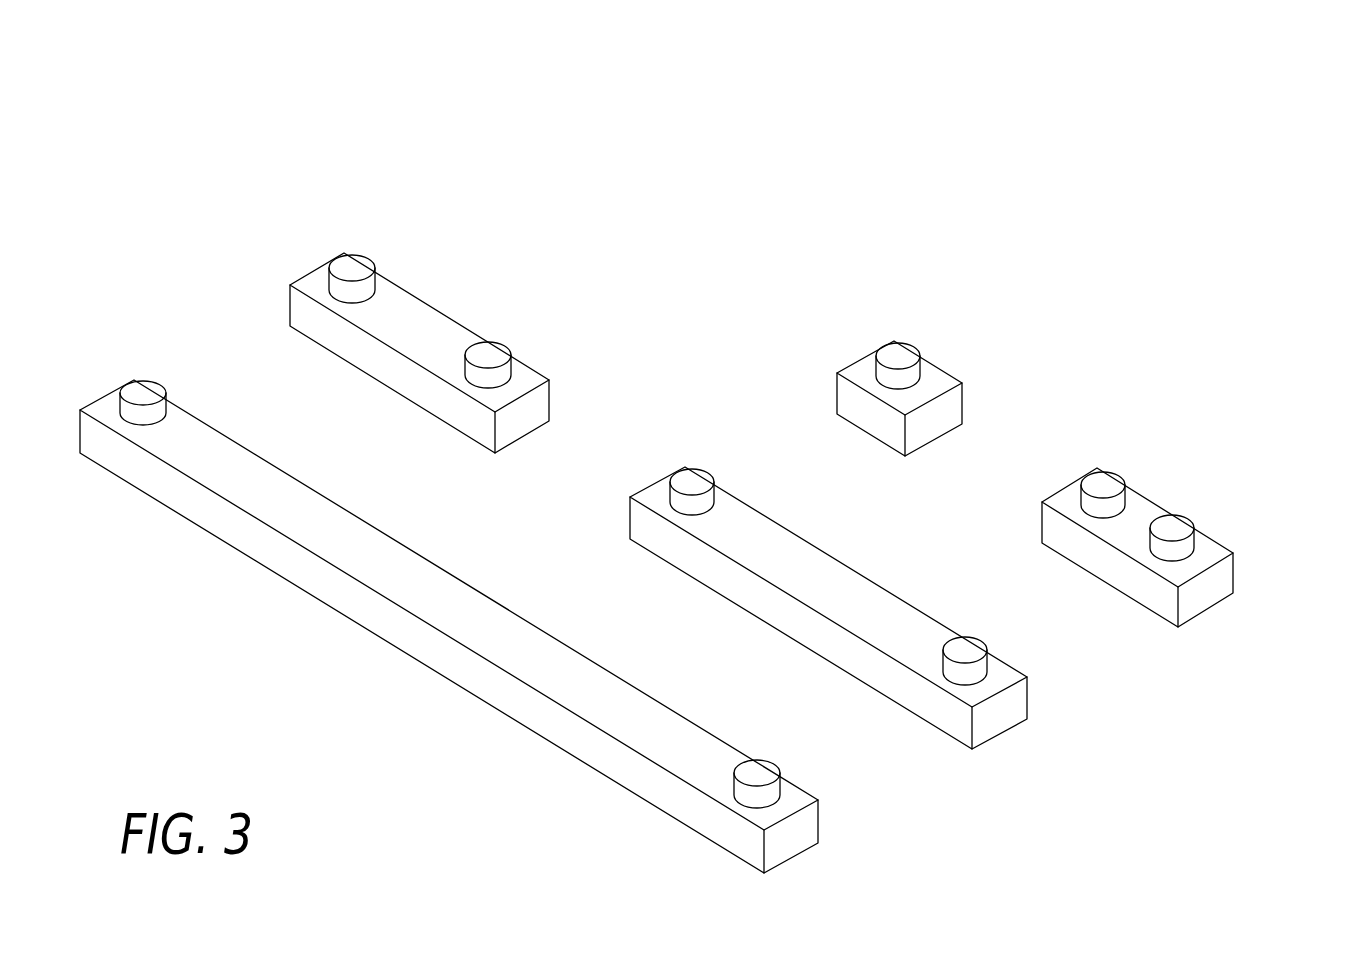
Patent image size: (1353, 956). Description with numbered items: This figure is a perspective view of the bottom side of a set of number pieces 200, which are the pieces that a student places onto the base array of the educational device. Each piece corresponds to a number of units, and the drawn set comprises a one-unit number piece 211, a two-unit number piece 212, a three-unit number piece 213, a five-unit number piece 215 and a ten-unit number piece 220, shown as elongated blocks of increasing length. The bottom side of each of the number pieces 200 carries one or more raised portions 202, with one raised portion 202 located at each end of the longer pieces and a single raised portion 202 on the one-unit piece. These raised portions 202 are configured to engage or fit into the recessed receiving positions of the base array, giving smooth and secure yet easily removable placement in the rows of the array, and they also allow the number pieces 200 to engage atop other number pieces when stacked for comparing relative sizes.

The number pieces 200 is at (652, 136).
The raised portion 202 is at (140, 392).
The 1-unit number piece 211 is at (937, 385).
The 2-unit number piece 212 is at (1207, 555).
The 3-unit number piece 213 is at (518, 378).
The 5-unit number piece 215 is at (1003, 675).
The 10-unit number piece 220 is at (792, 800).